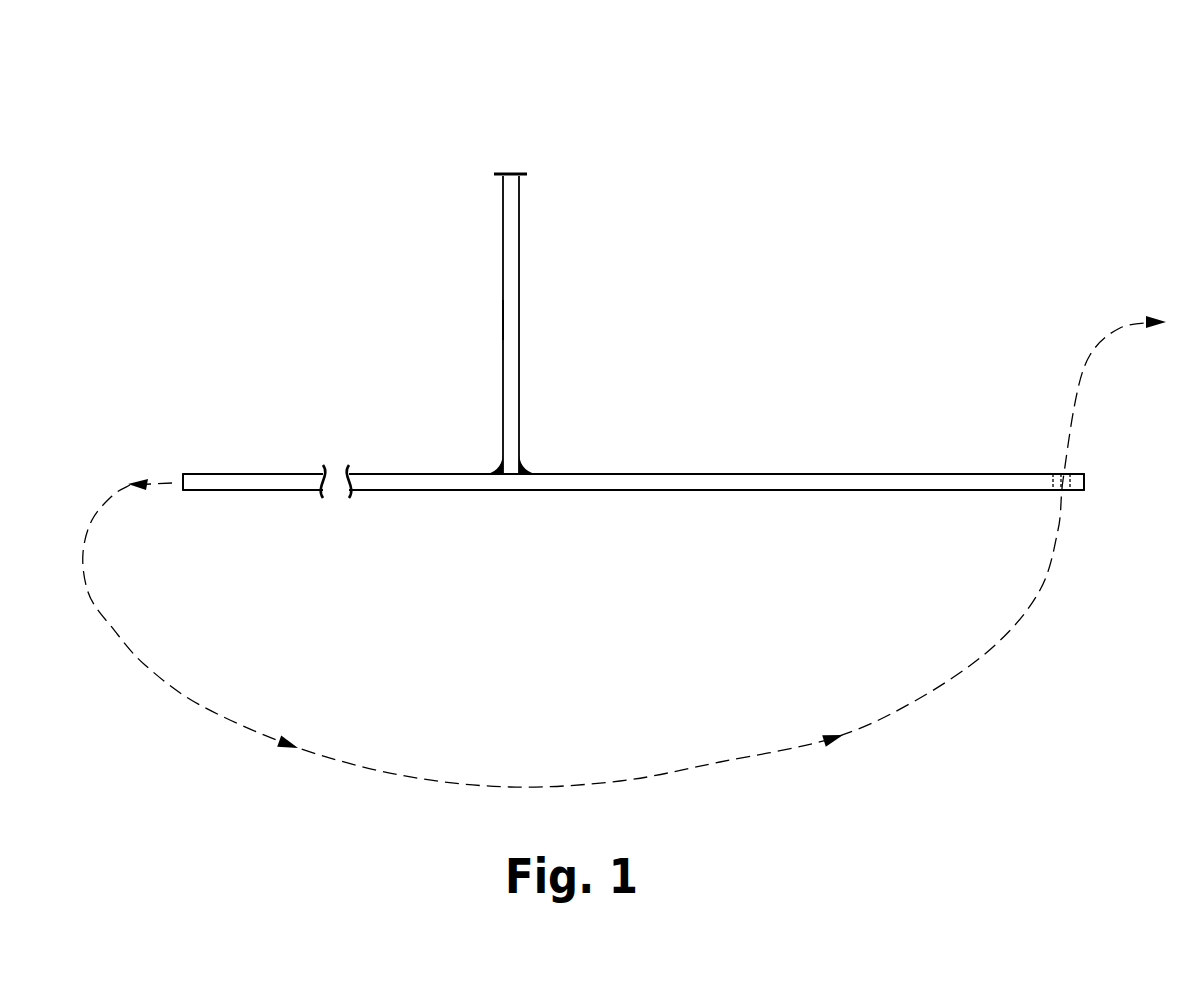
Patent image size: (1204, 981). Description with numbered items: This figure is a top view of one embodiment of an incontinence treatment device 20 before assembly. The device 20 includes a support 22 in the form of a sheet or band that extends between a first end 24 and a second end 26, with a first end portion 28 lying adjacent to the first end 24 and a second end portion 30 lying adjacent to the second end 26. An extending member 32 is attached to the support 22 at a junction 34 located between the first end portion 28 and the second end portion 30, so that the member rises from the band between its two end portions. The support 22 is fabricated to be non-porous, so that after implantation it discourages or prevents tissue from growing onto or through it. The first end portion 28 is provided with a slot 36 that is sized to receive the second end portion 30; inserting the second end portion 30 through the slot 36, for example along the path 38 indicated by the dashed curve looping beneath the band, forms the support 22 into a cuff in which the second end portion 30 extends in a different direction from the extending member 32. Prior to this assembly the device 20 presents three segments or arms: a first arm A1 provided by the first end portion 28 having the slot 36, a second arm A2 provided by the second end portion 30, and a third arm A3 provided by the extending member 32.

The incontinence treatment device 20 is at (643, 125).
The support 22 is at (745, 483).
The first end 24 is at (1086, 480).
The second end 26 is at (183, 478).
The first end portion 28 is at (1032, 478).
The second end portion 30 is at (197, 481).
The extending member 32 is at (520, 244).
The junction 34 is at (497, 474).
The slot 36 is at (1068, 492).
The path 38 is at (738, 765).
The first arm A1 is at (990, 490).
The second arm A2 is at (253, 492).
The third arm A3 is at (510, 316).